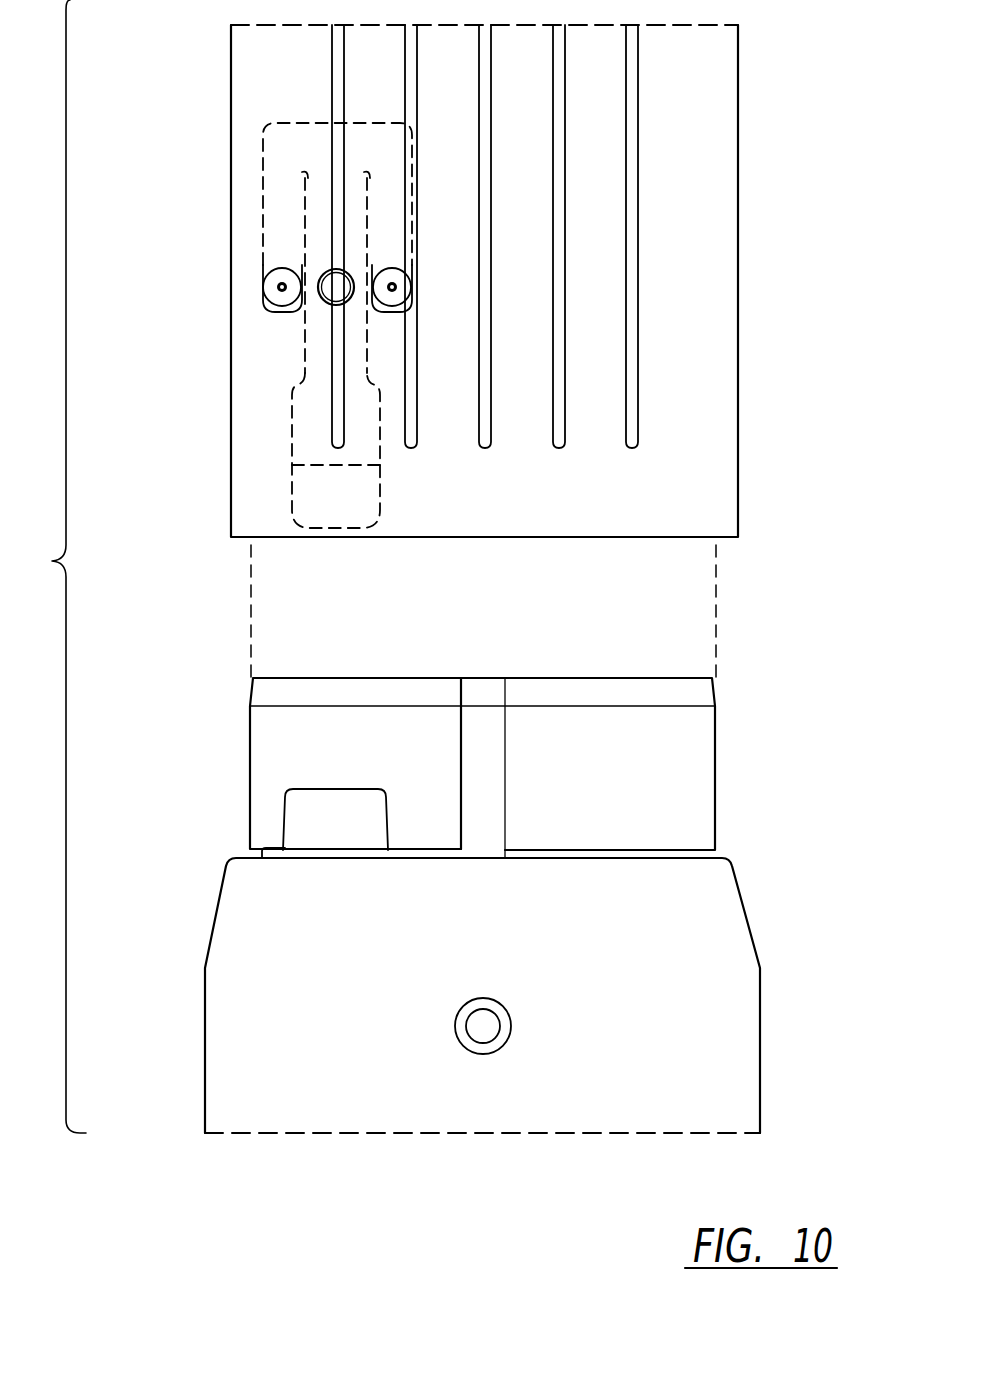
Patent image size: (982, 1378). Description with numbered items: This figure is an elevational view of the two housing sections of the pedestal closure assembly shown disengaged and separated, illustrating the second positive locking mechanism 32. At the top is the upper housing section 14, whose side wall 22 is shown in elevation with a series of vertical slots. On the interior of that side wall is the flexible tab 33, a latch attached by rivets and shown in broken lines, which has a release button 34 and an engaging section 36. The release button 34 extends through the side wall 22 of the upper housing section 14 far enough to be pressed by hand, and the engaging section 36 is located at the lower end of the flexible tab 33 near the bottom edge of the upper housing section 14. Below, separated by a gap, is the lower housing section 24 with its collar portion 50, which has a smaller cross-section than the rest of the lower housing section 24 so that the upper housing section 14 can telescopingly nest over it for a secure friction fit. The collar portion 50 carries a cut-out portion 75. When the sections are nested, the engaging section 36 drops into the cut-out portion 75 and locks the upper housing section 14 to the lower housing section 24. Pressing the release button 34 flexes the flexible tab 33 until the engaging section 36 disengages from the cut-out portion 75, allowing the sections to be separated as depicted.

The upper housing section 14 is at (738, 268).
The side wall 22 is at (697, 428).
The flexible tab 33 is at (303, 333).
The release button 34 is at (330, 282).
The engaging section 36 is at (307, 503).
The second positive locking mechanism 32 is at (308, 535).
The collar portion 50 is at (677, 755).
The cut-out portion 75 is at (303, 820).
The lower housing section 24 is at (712, 937).